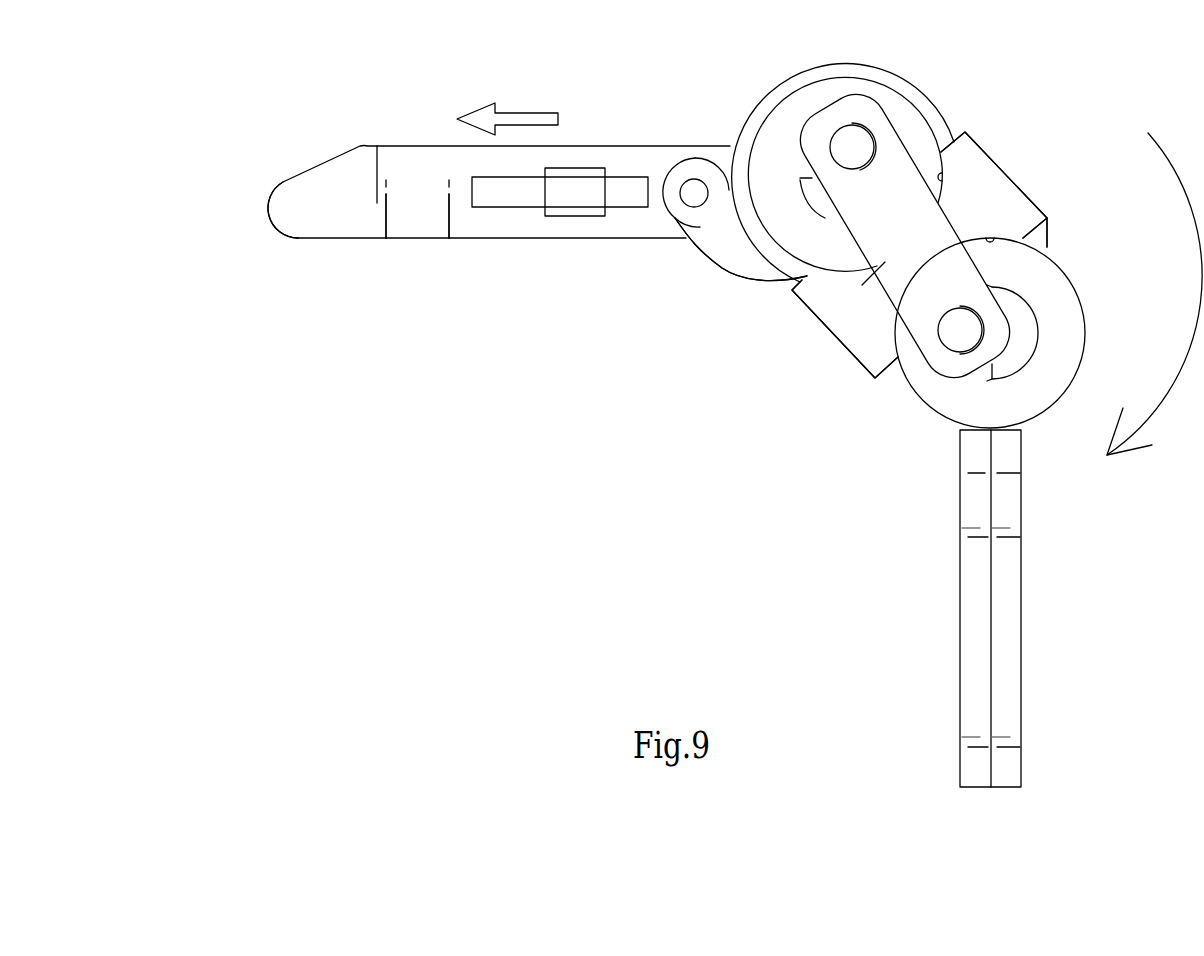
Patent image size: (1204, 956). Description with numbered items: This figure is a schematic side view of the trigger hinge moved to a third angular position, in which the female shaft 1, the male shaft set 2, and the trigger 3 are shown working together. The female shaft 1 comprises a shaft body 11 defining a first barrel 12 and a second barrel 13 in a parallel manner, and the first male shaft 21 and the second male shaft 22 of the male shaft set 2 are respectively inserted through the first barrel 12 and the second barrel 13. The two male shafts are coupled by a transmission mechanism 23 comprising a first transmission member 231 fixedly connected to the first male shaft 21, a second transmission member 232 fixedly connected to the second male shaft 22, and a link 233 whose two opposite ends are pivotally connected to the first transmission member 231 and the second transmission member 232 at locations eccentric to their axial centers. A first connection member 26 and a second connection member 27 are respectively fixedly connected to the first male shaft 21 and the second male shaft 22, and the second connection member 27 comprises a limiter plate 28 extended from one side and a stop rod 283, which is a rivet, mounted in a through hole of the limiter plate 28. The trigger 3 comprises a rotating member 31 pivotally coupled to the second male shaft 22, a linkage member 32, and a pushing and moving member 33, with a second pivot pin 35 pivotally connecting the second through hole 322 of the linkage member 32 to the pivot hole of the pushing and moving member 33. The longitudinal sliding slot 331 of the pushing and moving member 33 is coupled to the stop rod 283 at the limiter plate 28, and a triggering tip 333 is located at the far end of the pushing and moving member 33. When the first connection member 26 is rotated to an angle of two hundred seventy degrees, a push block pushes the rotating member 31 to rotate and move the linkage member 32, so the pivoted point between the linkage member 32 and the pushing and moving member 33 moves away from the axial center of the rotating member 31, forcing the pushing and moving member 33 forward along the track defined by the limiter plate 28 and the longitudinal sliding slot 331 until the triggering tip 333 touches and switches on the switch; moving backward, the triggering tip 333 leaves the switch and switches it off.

The female shaft 1 is at (810, 346).
The shaft body 11 is at (862, 362).
The first barrel 12 is at (1043, 245).
The second barrel 13 is at (930, 128).
The male shaft set 2 is at (948, 539).
The first male shaft 21 is at (1018, 315).
The second male shaft 22 is at (803, 232).
The transmission mechanism 23 is at (903, 403).
The first transmission member 231 is at (1073, 308).
The second transmission member 232 is at (932, 152).
The link 233 is at (885, 260).
The first connection member 26 is at (968, 597).
The second connection member 27 is at (720, 151).
The limiter plate 28 is at (583, 190).
The stop rod 283 is at (587, 212).
The trigger 3 is at (400, 245).
The rotating member 31 is at (747, 146).
The linkage member 32 is at (710, 255).
The second through hole 322 is at (688, 207).
The pushing and moving member 33 is at (361, 224).
The longitudinal sliding slot 331 is at (497, 207).
The triggering tip 333 is at (268, 208).
The second pivot pin 35 is at (689, 197).